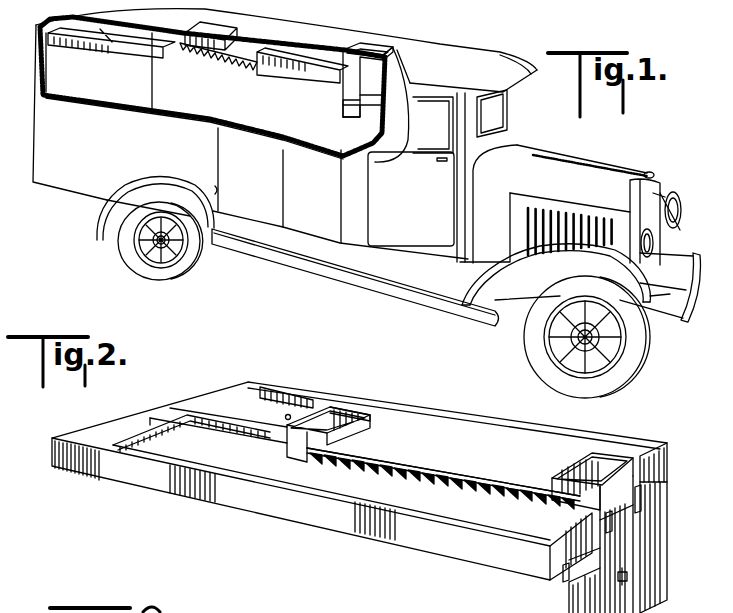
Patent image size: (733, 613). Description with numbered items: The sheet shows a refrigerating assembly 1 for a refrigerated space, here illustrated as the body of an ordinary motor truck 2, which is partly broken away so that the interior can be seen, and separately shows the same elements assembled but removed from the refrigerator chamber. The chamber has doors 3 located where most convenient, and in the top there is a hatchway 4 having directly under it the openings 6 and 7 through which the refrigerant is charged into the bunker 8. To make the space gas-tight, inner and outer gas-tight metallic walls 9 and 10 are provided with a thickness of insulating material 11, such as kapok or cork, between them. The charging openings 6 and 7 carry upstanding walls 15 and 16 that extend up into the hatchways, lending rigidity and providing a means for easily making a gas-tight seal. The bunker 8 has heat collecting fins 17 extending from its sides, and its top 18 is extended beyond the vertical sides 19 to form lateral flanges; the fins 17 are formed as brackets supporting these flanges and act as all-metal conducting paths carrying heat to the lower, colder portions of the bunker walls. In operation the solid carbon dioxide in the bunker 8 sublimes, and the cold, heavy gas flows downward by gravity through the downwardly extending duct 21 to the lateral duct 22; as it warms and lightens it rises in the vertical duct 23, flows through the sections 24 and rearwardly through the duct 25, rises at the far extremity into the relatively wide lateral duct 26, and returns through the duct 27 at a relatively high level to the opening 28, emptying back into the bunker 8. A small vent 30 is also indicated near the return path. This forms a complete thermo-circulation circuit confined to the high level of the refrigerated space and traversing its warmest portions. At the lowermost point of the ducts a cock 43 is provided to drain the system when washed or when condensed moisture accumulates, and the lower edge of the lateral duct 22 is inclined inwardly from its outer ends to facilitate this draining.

In FIG. 1, the truck 1 is at (359, 199).
In FIG. 1, the motor truck 2 is at (528, 152).
In FIG. 1, the doors 3 is at (69, 4).
In FIG. 1, the hatchway 4 is at (208, 23).
In FIG. 1, the opening 6 is at (180, 40).
In FIG. 2, the opening 6 is at (347, 428).
In FIG. 1, the opening 7 is at (357, 43).
In FIG. 2, the opening 7 is at (617, 453).
In FIG. 1, the bunker 8 is at (235, 67).
In FIG. 2, the bunker 8 is at (407, 482).
In FIG. 1, the inner gas-tight metallic wall 9 is at (187, 120).
In FIG. 1, the outer gas-tight metallic wall 10 is at (207, 120).
In FIG. 1, the insulating material 11 is at (317, 140).
In FIG. 1, the upstanding wall 15 is at (387, 47).
In FIG. 2, the upstanding wall 15 is at (372, 427).
In FIG. 2, the upstanding wall 16 is at (567, 462).
In FIG. 2, the fins 17 is at (333, 463).
In FIG. 2, the top of the bunker 18 is at (417, 470).
In FIG. 2, the vertical sides 19 is at (289, 444).
In FIG. 2, the downwardly extending duct 21 is at (620, 513).
In FIG. 1, the lateral duct 22 is at (354, 108).
In FIG. 2, the lateral duct 22 is at (603, 583).
In FIG. 1, the vertical duct 23 is at (345, 100).
In FIG. 2, the vertical duct 23 is at (655, 502).
In FIG. 2, the sections 24 is at (662, 460).
In FIG. 2, the duct 25 is at (457, 410).
In FIG. 2, the lateral duct 26 is at (100, 425).
In FIG. 2, the return duct 27 is at (165, 402).
In FIG. 2, the opening 28 is at (325, 412).
In FIG. 2, the pin 30 is at (285, 417).
In FIG. 2, the cock 43 is at (628, 576).